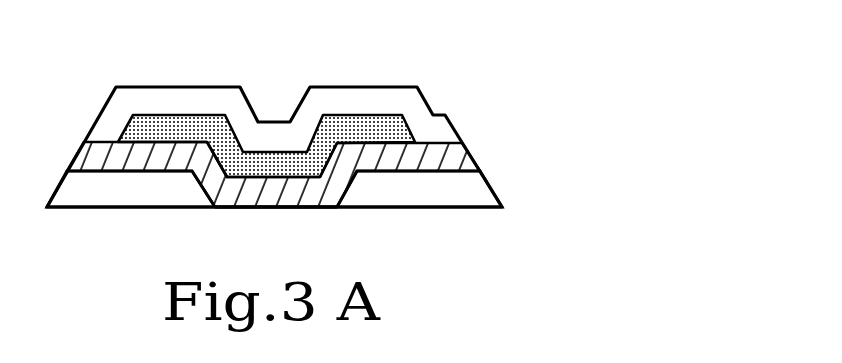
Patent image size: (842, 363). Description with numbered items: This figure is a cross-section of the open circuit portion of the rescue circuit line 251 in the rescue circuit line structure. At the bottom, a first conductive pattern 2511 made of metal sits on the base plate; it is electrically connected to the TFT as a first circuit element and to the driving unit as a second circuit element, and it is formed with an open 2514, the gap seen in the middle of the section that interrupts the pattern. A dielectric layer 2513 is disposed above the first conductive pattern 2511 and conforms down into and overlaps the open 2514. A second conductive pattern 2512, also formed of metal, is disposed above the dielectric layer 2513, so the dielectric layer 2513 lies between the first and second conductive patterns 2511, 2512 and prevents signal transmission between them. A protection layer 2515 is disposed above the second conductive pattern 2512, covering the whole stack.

The rescue circuit line 251 is at (641, 87).
The first conductive pattern 2511 is at (478, 192).
The second conductive pattern 2512 is at (415, 133).
The dielectric layer 2513 is at (458, 162).
The open 2514 is at (332, 213).
The protection layer 2515 is at (413, 110).